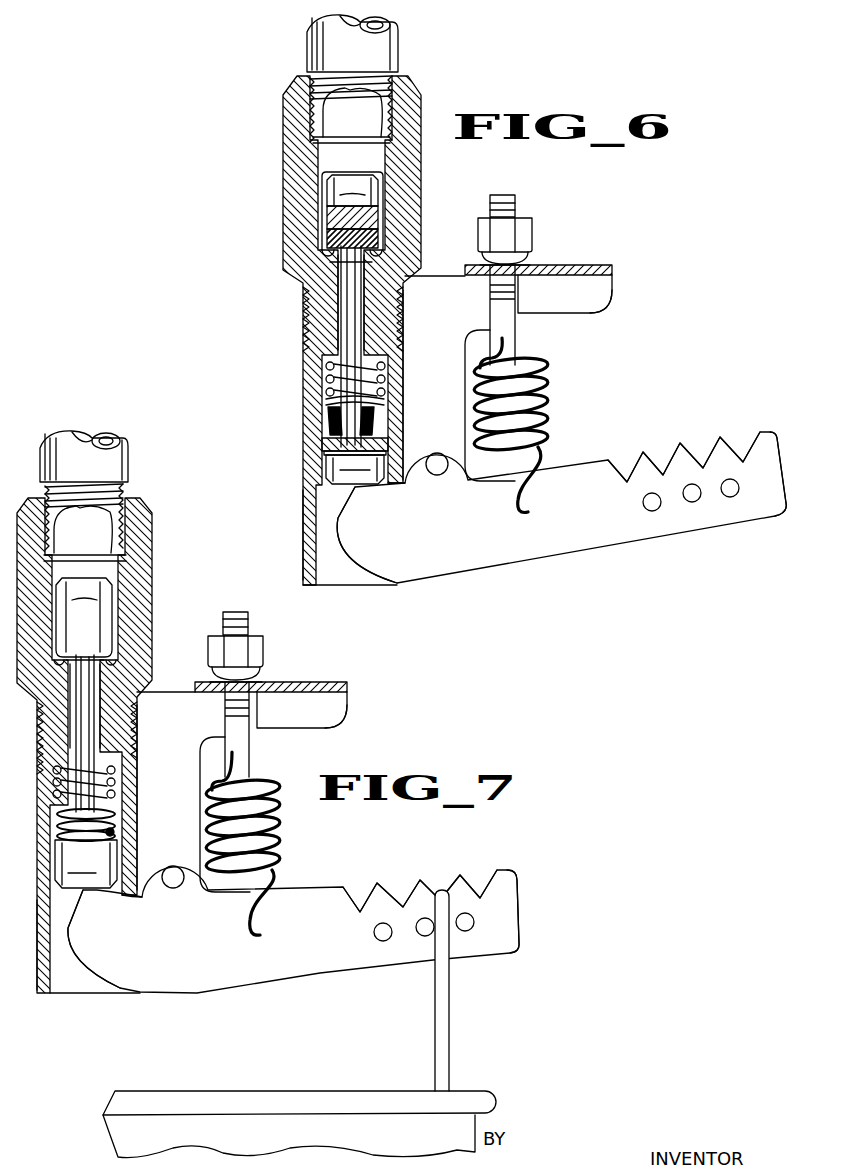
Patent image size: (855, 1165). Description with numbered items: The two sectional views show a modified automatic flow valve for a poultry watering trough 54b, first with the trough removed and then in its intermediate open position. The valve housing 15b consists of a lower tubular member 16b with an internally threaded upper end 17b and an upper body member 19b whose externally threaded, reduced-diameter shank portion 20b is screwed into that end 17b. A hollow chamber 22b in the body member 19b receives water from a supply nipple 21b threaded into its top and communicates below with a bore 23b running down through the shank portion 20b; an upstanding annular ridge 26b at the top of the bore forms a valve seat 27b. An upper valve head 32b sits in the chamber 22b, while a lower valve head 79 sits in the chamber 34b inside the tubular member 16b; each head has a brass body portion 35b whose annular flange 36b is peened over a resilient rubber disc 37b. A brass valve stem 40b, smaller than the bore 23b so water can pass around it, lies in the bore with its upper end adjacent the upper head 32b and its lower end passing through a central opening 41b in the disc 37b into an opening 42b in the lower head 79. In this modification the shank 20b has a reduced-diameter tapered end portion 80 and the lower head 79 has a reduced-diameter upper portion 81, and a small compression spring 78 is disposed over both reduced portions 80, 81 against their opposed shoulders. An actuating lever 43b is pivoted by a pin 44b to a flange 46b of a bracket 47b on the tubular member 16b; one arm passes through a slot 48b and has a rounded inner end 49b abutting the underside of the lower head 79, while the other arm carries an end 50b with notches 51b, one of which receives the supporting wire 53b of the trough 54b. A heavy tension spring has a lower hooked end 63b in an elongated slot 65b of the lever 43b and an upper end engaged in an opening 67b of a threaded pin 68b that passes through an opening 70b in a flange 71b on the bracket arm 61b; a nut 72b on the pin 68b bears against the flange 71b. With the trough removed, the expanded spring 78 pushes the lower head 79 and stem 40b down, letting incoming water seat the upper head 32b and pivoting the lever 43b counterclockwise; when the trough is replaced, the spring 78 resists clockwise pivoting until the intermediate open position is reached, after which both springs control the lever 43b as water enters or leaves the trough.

In FIG. 6, the valve housing 15b is at (300, 300).
In FIG. 7, the valve housing 15b is at (149, 584).
In FIG. 6, the lower tubular member 16b is at (312, 505).
In FIG. 7, the lower tubular member 16b is at (45, 995).
In FIG. 6, the internally threaded upper end 17b is at (396, 331).
In FIG. 7, the internally threaded upper end 17b is at (130, 728).
In FIG. 6, the upper body member 19b is at (405, 158).
In FIG. 7, the upper body member 19b is at (140, 524).
In FIG. 6, the shank portion 20b is at (378, 297).
In FIG. 7, the shank portion 20b is at (108, 712).
In FIG. 6, the water supply nipple 21b is at (393, 53).
In FIG. 7, the water supply nipple 21b is at (118, 463).
In FIG. 6, the chamber 22b is at (320, 152).
In FIG. 7, the chamber 22b is at (120, 576).
In FIG. 6, the bore 23b is at (365, 322).
In FIG. 7, the bore 23b is at (100, 745).
In FIG. 6, the annular ridge 26b is at (372, 259).
In FIG. 7, the annular ridge 26b is at (105, 672).
In FIG. 6, the valve seat 27b is at (334, 262).
In FIG. 7, the valve seat 27b is at (105, 658).
In FIG. 6, the upper valve head 32b is at (325, 199).
In FIG. 7, the upper valve head 32b is at (108, 605).
In FIG. 7, the chamber 34b is at (77, 973).
In FIG. 6, the body portion 35b is at (383, 181).
In FIG. 6, the annular flange 36b is at (330, 232).
In FIG. 6, the rubber disc 37b is at (382, 236).
In FIG. 6, the valve stem 40b is at (350, 320).
In FIG. 7, the valve stem 40b is at (85, 762).
In FIG. 6, the central opening 41b is at (330, 453).
In FIG. 6, the opening 42b is at (378, 441).
In FIG. 6, the valve actuating lever 43b is at (560, 536).
In FIG. 7, the valve actuating lever 43b is at (303, 980).
In FIG. 6, the pin 44b is at (437, 470).
In FIG. 7, the pin 44b is at (173, 888).
In FIG. 7, the flange 46b is at (185, 810).
In FIG. 6, the bracket 47b is at (597, 293).
In FIG. 7, the bracket 47b is at (337, 705).
In FIG. 6, the slot 48b is at (389, 486).
In FIG. 7, the slot 48b is at (130, 897).
In FIG. 6, the rounded inner end portion 49b is at (345, 514).
In FIG. 7, the rounded inner end portion 49b is at (86, 891).
In FIG. 6, the end 50b is at (707, 522).
In FIG. 7, the end 50b is at (512, 925).
In FIG. 6, the notches 51b is at (757, 433).
In FIG. 7, the notches 51b is at (497, 875).
In FIG. 7, the supporting wire 53b is at (440, 1012).
In FIG. 7, the poultry watering trough 54b is at (322, 1072).
In FIG. 6, the arm 61b is at (592, 314).
In FIG. 7, the arm 61b is at (330, 728).
In FIG. 6, the lower hooked end 63b is at (521, 488).
In FIG. 7, the lower hooked end 63b is at (252, 910).
In FIG. 6, the elongated slot 65b is at (530, 513).
In FIG. 7, the elongated slot 65b is at (252, 945).
In FIG. 7, the opening 67b is at (245, 748).
In FIG. 6, the threaded pin 68b is at (508, 197).
In FIG. 7, the threaded pin 68b is at (250, 619).
In FIG. 6, the opening 70b is at (526, 283).
In FIG. 7, the opening 70b is at (262, 698).
In FIG. 6, the flange 71b is at (612, 269).
In FIG. 7, the flange 71b is at (347, 687).
In FIG. 6, the nut 72b is at (524, 232).
In FIG. 7, the nut 72b is at (263, 648).
In FIG. 6, the compression spring 78 is at (335, 403).
In FIG. 7, the compression spring 78 is at (98, 820).
In FIG. 6, the valve head 79 is at (330, 470).
In FIG. 7, the valve head 79 is at (86, 864).
In FIG. 6, the reduced diameter tapered end portion 80 is at (373, 373).
In FIG. 7, the reduced diameter tapered end portion 80 is at (112, 786).
In FIG. 6, the reduced diameter upper portion 81 is at (380, 414).
In FIG. 7, the reduced diameter upper portion 81 is at (110, 830).